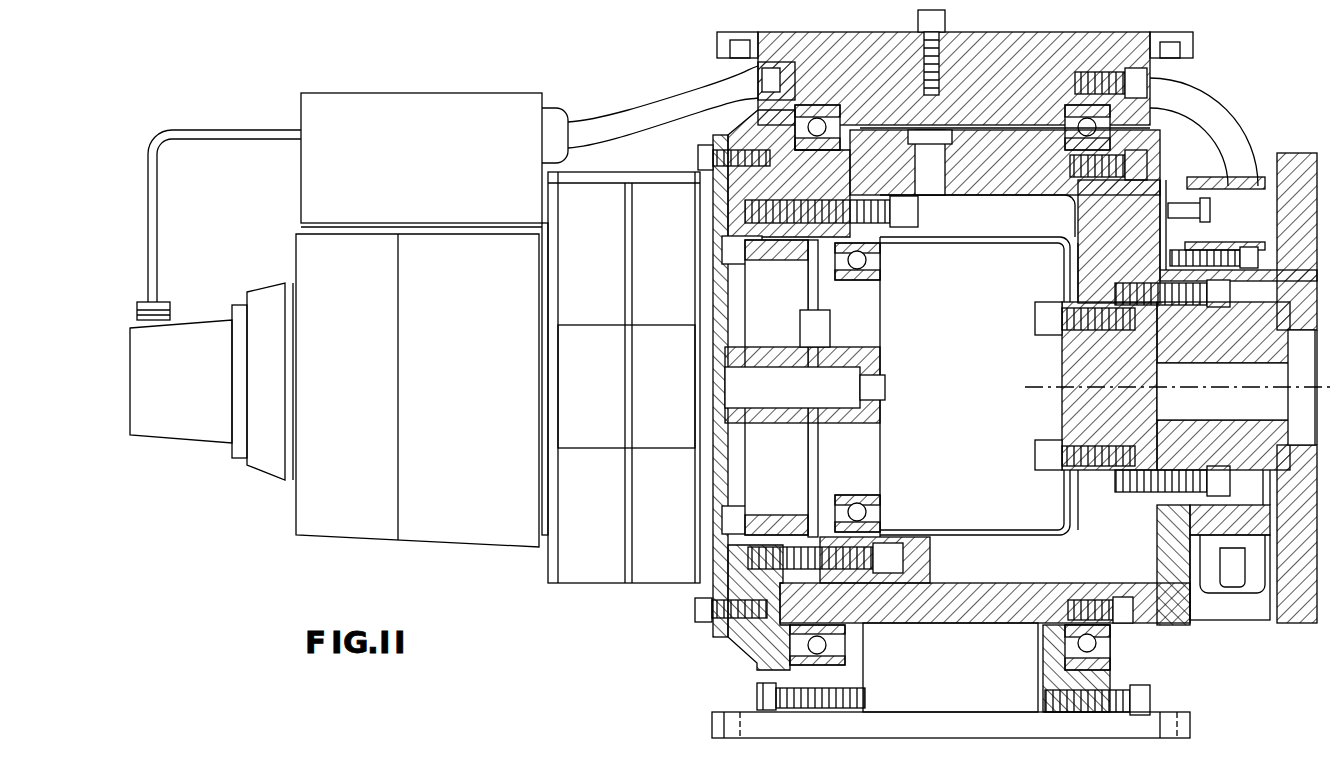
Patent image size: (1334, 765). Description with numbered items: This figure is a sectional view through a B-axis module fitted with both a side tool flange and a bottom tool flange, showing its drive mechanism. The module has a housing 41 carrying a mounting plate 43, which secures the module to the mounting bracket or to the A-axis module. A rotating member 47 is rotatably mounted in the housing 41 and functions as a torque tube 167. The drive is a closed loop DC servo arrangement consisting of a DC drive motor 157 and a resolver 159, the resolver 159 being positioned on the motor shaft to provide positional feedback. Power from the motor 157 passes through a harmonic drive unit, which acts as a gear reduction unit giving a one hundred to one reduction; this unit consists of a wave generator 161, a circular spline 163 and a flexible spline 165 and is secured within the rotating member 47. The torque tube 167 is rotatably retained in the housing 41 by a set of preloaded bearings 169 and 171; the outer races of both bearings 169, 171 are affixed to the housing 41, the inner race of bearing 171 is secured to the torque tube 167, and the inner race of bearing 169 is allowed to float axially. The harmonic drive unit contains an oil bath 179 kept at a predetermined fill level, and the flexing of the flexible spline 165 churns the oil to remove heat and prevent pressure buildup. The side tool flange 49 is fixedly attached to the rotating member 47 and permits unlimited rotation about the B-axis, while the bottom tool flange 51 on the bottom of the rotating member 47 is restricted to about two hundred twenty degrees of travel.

The housing 41 is at (748, 640).
The mounting plate 43 is at (1195, 42).
The rotating member 47 is at (1037, 600).
The side tool flange 49 is at (1300, 200).
The bottom tool flange 51 is at (712, 725).
The DC drive motor 157 is at (470, 527).
The resolver 159 is at (198, 432).
The wave generator 161 is at (877, 497).
The circular spline 163 is at (885, 543).
The flexible spline 165 is at (1075, 500).
The torque tube 167 is at (970, 590).
The bearing 169 is at (1055, 668).
The bearing 171 is at (803, 658).
The oil bath 179 is at (1040, 385).